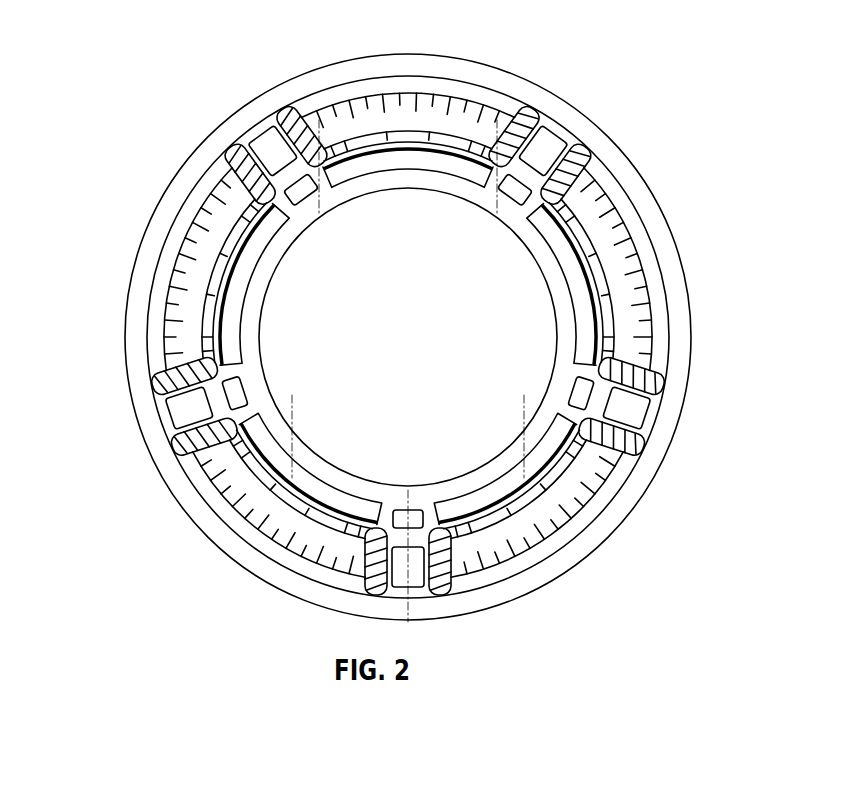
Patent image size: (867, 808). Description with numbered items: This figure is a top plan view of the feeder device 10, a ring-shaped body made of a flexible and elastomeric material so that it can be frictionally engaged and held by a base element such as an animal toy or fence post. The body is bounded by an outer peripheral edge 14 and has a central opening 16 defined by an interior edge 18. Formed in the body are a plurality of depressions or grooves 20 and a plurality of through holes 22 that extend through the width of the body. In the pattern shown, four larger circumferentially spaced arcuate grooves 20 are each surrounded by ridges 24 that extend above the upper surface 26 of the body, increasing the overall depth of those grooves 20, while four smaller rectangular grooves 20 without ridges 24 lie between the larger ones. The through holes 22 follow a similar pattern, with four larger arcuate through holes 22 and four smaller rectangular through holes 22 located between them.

The feeder device 10 is at (660, 162).
The outer peripheral edge 14 is at (128, 320).
The central opening 16 is at (426, 349).
The interior edge 18 is at (294, 240).
The depressions or grooves 20 is at (268, 140).
The through holes 22 is at (316, 196).
The ridges 24 is at (205, 175).
The upper surface 26 is at (362, 183).